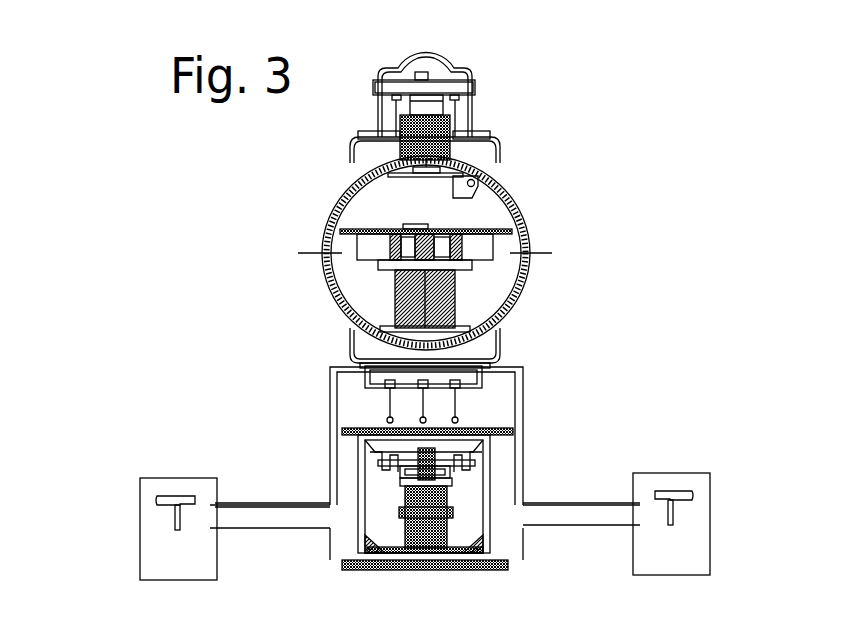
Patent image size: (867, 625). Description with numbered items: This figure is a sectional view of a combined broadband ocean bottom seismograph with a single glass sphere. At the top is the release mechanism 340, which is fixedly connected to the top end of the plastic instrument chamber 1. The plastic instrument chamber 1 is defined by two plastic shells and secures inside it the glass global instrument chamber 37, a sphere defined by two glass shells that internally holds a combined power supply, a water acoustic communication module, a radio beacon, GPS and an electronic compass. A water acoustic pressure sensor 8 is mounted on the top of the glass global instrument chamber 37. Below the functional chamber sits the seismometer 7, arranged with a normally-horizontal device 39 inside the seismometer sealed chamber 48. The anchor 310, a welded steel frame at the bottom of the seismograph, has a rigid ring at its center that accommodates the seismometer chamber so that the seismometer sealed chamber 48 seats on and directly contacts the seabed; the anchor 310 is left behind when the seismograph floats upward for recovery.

The release mechanism 340 is at (463, 92).
The plastic instrument chamber 1 is at (500, 159).
The glass global instrument chamber 37 is at (603, 158).
The water acoustic pressure sensor 8 is at (365, 141).
The normally-horizontal device 39 is at (463, 445).
The seismometer 7 is at (440, 497).
The anchor 310 is at (570, 517).
The seismometer sealed chamber 48 is at (488, 497).